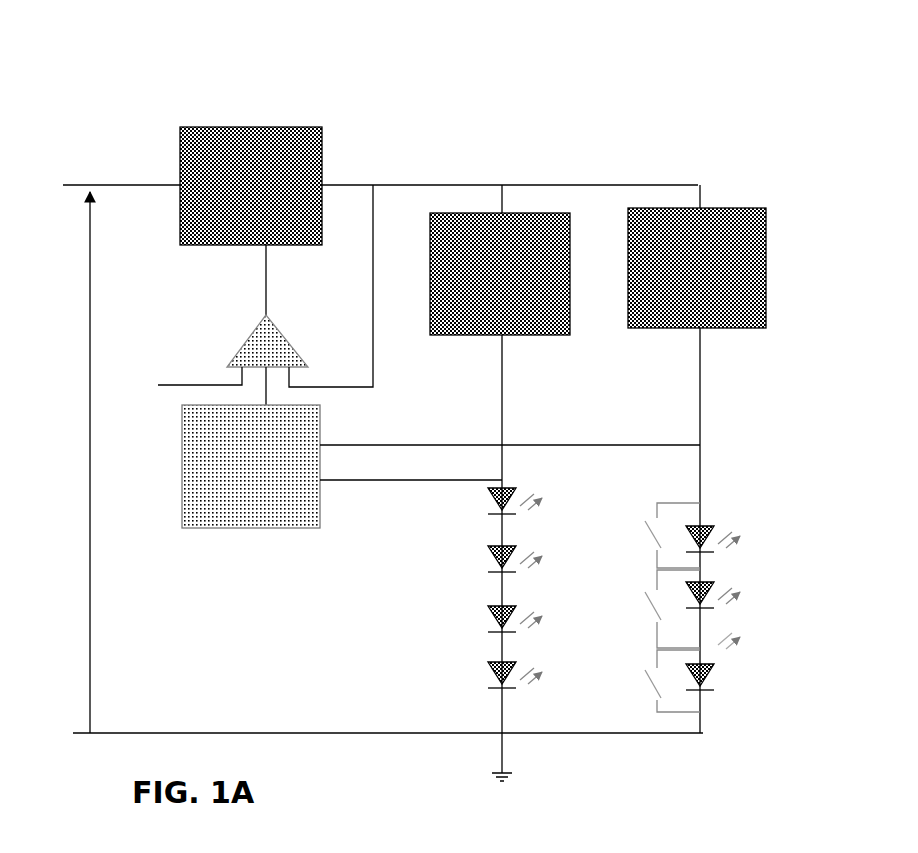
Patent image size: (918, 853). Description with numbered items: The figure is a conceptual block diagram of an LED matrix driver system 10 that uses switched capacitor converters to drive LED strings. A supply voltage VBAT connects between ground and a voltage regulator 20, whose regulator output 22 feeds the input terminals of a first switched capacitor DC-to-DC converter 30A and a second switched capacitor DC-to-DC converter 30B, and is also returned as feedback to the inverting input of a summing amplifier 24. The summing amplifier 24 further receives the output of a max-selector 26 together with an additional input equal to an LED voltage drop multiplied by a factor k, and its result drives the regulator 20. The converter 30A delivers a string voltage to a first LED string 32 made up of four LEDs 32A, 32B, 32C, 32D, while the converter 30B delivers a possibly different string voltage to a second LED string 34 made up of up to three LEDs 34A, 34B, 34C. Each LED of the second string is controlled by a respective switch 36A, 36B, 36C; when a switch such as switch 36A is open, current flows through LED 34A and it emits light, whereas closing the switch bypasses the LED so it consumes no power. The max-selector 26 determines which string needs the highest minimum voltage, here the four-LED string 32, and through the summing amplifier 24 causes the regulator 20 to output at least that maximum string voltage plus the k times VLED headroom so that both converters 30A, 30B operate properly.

The LED matrix driver system 10 is at (130, 60).
The voltage regulator 20 is at (239, 125).
The regulator output 22 is at (331, 181).
The summing amplifier 24 is at (237, 330).
The max-selector 26 is at (257, 535).
The switched capacitor DC-to-DC converter 30A is at (467, 340).
The switched capacitor DC-to-DC converter 30B is at (665, 332).
The LED string 32 is at (474, 565).
The LED 32A is at (472, 515).
The LED 32B is at (472, 573).
The LED 32C is at (472, 631).
The LED 32D is at (472, 687).
The LED string 34 is at (689, 561).
The LED 34A is at (737, 547).
The LED 34B is at (737, 605).
The LED 34C is at (727, 685).
The switch 36A is at (646, 541).
The switch 36B is at (646, 605).
The switch 36C is at (648, 679).